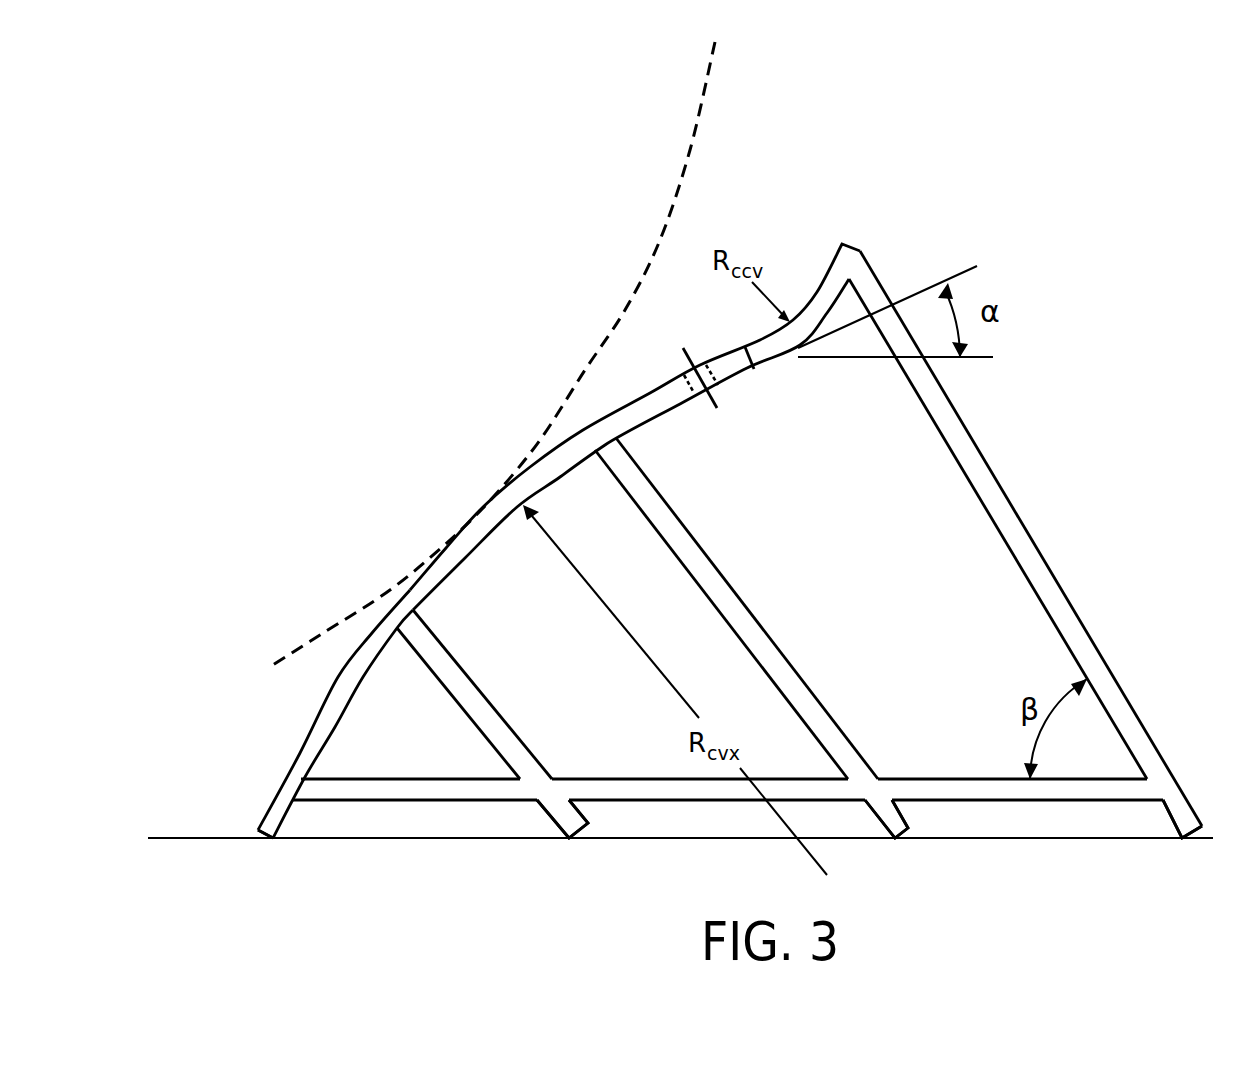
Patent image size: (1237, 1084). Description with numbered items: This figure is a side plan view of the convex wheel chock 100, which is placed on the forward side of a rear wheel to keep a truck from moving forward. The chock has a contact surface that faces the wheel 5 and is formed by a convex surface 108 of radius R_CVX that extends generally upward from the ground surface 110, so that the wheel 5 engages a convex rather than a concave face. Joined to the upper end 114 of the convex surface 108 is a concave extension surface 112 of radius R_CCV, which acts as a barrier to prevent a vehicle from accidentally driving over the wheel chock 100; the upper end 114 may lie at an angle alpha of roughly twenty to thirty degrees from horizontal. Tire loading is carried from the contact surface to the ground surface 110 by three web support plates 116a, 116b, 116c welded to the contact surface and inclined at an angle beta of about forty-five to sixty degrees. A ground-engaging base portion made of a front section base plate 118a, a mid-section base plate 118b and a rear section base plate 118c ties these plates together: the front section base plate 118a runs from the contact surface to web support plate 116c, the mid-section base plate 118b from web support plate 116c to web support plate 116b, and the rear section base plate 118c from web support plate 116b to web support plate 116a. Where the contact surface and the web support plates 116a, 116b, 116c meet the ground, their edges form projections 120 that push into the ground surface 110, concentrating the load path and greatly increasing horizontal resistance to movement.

The wheel 5 is at (710, 80).
The convex wheel chock 100 is at (1162, 157).
The convex surface 108 is at (333, 678).
The ground surface 110 is at (552, 923).
The concave extension surface 112 is at (813, 299).
The upper end 114 is at (752, 370).
The web support plate 116a is at (1014, 506).
The web support plate 116b is at (772, 632).
The web support plate 116c is at (476, 684).
The front section base plate 118a is at (387, 802).
The mid-section base plate 118b is at (633, 802).
The rear section base plate 118c is at (980, 802).
The projection 120 is at (258, 830).